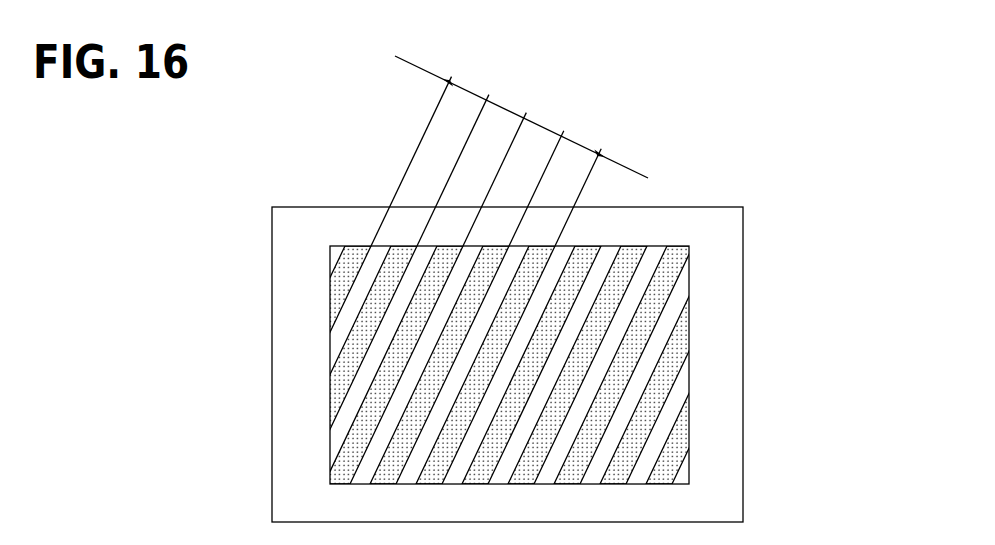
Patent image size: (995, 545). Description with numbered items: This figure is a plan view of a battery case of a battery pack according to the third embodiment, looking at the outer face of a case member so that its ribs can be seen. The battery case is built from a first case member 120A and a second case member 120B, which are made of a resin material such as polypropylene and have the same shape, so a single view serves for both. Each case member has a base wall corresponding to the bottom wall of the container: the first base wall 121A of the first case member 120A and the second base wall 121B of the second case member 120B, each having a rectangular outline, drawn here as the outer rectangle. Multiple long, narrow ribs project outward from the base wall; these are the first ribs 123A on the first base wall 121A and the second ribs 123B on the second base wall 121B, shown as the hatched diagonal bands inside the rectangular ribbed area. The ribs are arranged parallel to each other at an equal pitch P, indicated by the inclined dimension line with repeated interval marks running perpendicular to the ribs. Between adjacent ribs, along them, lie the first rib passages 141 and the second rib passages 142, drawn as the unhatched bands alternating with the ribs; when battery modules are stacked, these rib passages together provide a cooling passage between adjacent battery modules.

The first case member 120A is at (447, 289).
The second case member 120B is at (315, 202).
The first base wall 121A is at (426, 364).
The second base wall 121B is at (300, 246).
The first ribs 123A is at (447, 365).
The second ribs 123B is at (368, 297).
The first rib passages 141 is at (402, 365).
The second rib passages 142 is at (342, 335).
The pitch P is at (509, 151).